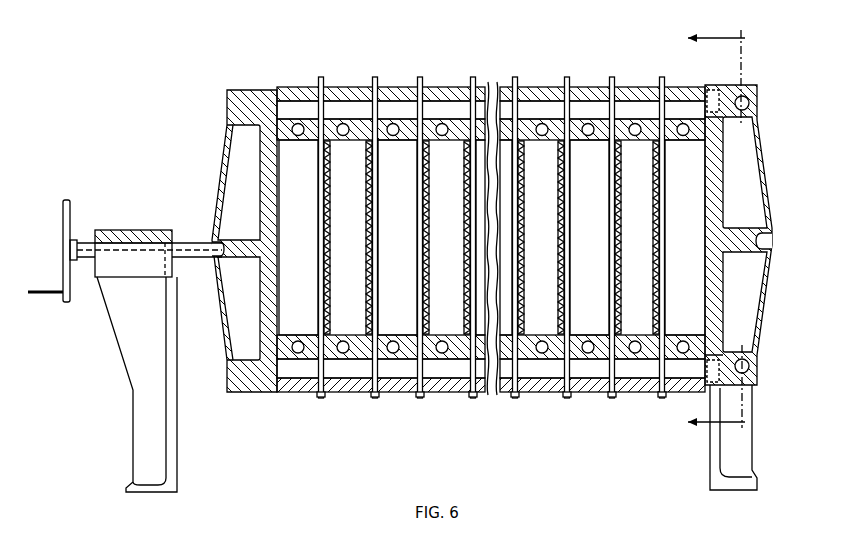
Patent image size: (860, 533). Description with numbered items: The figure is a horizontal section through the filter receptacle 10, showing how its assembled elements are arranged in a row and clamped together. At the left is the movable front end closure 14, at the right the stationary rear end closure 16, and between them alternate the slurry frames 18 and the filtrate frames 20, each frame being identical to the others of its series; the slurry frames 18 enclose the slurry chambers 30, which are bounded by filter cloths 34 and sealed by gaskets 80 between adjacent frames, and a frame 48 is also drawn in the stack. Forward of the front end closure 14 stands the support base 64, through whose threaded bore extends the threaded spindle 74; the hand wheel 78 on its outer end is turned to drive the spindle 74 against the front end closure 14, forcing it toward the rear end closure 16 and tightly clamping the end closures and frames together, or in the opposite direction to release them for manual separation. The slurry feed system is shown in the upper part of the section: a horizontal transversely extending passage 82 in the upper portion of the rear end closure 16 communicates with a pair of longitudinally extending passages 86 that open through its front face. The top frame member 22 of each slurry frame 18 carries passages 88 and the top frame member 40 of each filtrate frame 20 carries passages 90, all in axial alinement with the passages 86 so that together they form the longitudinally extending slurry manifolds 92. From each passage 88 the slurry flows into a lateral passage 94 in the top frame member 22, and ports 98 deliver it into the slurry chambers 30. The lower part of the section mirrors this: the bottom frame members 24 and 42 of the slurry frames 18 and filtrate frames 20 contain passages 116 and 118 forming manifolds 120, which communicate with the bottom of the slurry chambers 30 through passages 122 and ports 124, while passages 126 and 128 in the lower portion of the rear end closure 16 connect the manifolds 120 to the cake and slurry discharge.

The filter receptacle 10 is at (248, 41).
The front end closure 14 is at (228, 91).
The rear end closure 16 is at (724, 270).
The slurry frames 18 is at (285, 86).
The filtrate frames 20 is at (332, 85).
The top frame member 22 is at (394, 90).
The bottom frame member 24 is at (400, 392).
The slurry chambers 30 is at (285, 246).
The filter cloths 34 is at (322, 395).
The top frame member 40 is at (430, 88).
The bottom frame member 42 is at (437, 392).
The filter frame 48 is at (345, 269).
The support base 64 is at (178, 412).
The threaded spindle 74 is at (181, 242).
The hand wheel 78 is at (64, 205).
The gaskets 80 is at (325, 395).
The horizontal transversely extending passage 82 is at (752, 96).
The longitudinally extending passages 86 is at (712, 100).
The passages 88 is at (297, 113).
The passages 90 is at (347, 111).
The slurry manifolds 92 is at (444, 105).
The passage 94 is at (291, 143).
The ports 98 is at (300, 145).
The passages 116 is at (390, 373).
The passages 118 is at (461, 373).
The manifolds 120 is at (448, 372).
The passages 122 is at (578, 394).
The ports 124 is at (580, 336).
The passage 126 is at (757, 386).
The passages 128 is at (705, 372).